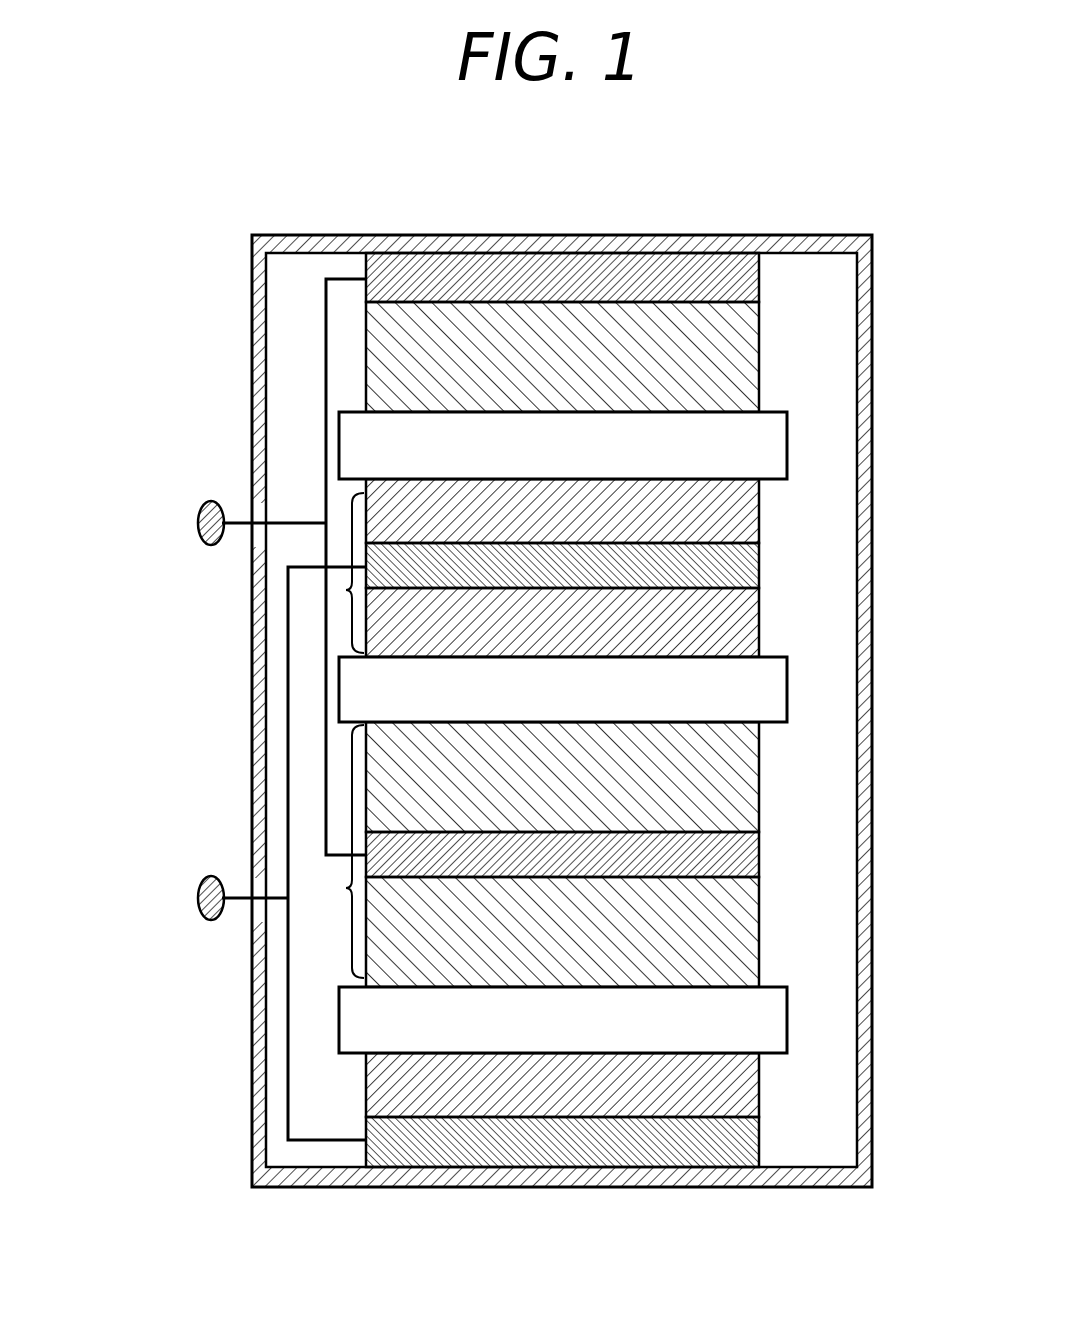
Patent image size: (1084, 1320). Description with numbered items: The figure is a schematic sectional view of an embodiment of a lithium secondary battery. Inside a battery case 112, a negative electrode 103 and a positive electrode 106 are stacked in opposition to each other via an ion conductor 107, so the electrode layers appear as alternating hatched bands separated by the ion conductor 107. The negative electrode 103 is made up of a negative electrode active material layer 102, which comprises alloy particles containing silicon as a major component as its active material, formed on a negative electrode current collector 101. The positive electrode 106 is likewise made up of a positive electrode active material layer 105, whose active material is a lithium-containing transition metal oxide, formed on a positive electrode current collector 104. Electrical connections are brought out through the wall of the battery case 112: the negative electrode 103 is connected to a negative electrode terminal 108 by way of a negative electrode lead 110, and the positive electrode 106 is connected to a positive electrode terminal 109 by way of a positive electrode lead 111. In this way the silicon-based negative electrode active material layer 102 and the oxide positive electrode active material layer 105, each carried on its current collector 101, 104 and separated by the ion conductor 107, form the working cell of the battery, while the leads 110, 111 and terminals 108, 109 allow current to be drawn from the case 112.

The negative electrode current collector 101 is at (759, 565).
The negative electrode active material layer 102 is at (759, 503).
The negative electrode 103 is at (342, 590).
The positive electrode current collector 104 is at (366, 268).
The positive electrode active material layer 105 is at (366, 340).
The positive electrode 106 is at (342, 888).
The ion conductor 107 is at (342, 425).
The negative electrode terminal 108 is at (198, 898).
The positive electrode terminal 109 is at (198, 523).
The negative electrode lead 110 is at (288, 978).
The positive electrode lead 111 is at (326, 455).
The battery case 112 is at (252, 603).